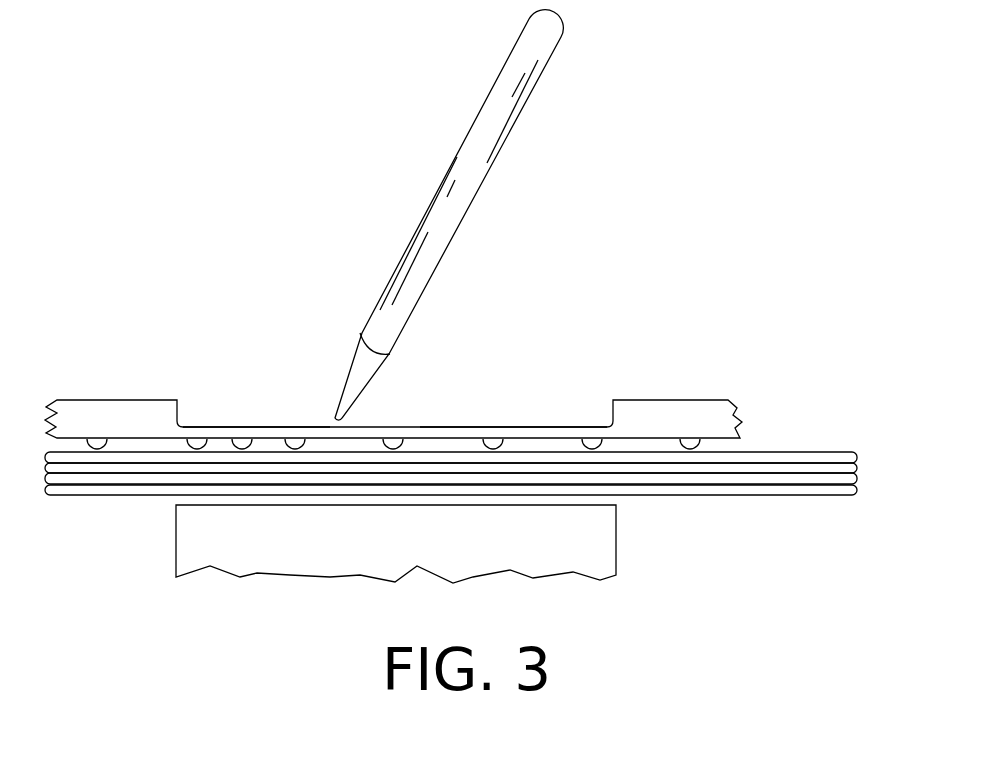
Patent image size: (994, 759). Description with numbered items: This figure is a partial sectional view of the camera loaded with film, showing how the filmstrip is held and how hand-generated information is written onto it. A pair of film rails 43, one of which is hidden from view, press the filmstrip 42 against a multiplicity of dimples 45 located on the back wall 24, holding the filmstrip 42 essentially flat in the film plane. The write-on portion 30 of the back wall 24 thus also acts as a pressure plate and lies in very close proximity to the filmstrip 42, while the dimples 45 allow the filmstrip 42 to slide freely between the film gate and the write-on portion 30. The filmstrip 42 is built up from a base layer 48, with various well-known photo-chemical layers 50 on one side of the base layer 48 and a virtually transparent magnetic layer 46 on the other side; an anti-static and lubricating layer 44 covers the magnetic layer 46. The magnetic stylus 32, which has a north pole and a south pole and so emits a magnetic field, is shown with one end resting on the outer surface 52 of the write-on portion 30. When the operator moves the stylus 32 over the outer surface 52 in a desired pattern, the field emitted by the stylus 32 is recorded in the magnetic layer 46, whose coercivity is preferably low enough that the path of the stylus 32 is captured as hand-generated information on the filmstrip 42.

The back wall 24 is at (68, 414).
The dimples 45 is at (100, 440).
The write-on portion 30 is at (248, 437).
The outer surface 52 is at (480, 427).
The magnetic stylus 32 is at (495, 188).
The filmstrip 42 is at (480, 446).
The anti-static and lubricating layer 44 is at (827, 455).
The magnetic layer 46 is at (857, 467).
The base layer 48 is at (793, 478).
The photo-chemical layers 50 is at (713, 490).
The film rails 43 is at (257, 565).